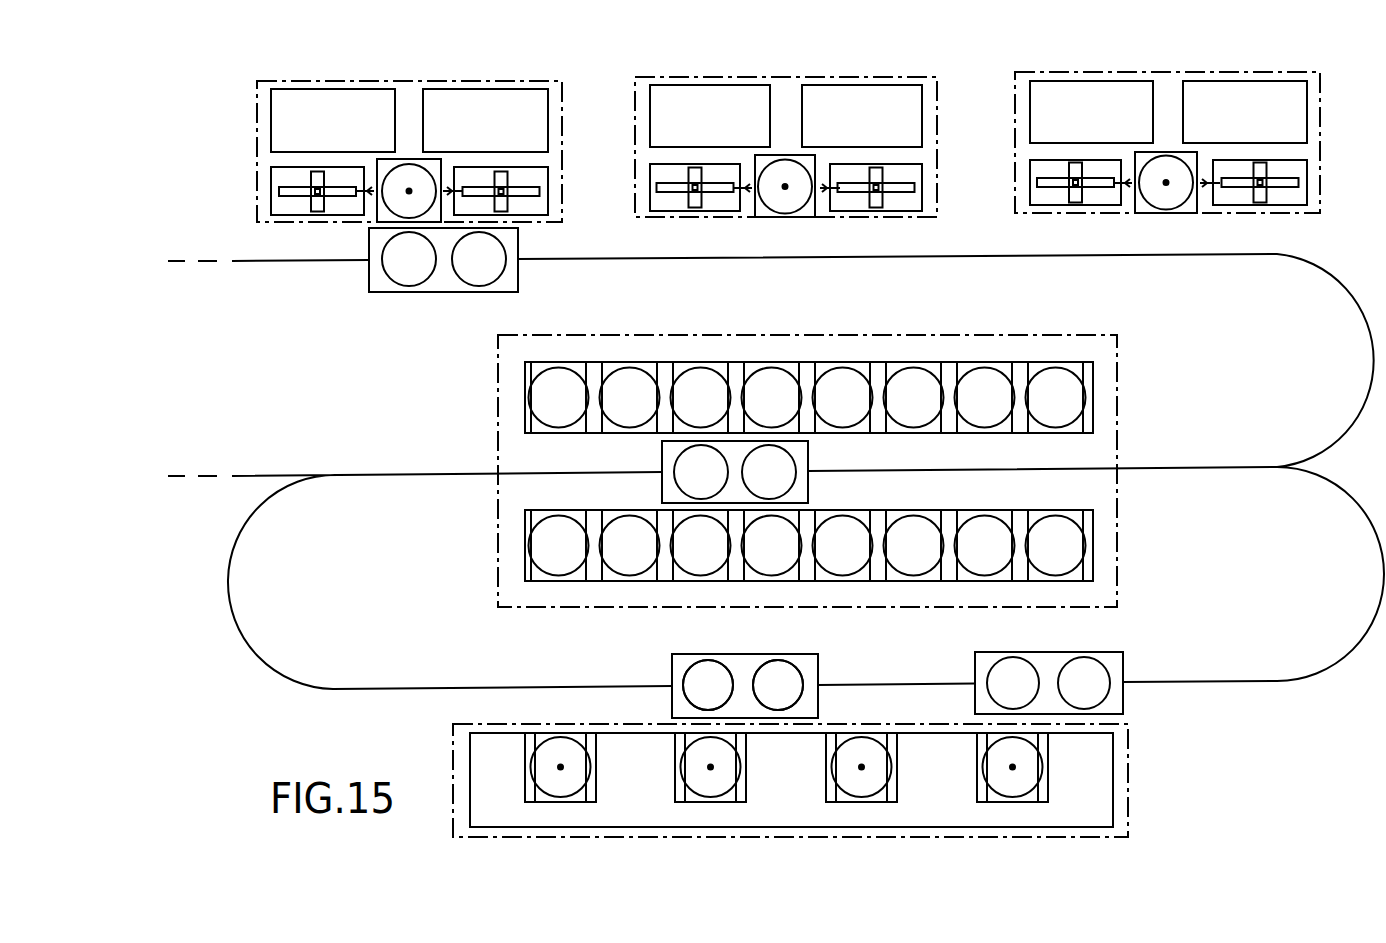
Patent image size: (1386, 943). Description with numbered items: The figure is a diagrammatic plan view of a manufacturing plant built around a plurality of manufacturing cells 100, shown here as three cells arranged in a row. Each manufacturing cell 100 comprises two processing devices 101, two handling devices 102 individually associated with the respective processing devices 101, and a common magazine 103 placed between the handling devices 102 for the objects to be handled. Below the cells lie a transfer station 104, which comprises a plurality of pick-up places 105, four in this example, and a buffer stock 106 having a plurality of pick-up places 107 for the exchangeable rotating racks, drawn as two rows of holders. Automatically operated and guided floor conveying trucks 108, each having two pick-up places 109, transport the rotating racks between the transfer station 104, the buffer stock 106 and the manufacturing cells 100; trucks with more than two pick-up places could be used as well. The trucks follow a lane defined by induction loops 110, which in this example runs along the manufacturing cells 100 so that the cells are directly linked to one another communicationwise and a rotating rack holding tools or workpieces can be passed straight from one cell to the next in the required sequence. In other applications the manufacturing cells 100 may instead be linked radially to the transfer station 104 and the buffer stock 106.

The manufacturing cell 100 is at (288, 81).
The processing device 101 is at (282, 100).
The handling device 102 is at (282, 193).
The common magazine 103 is at (409, 173).
The transfer station 104 is at (1130, 743).
The pick-up place 105 is at (1032, 762).
The buffer stock 106 is at (1120, 363).
The pick-up place 107 is at (1068, 387).
The floor conveying truck 108 is at (445, 278).
The pick-up place 109 is at (713, 673).
The induction loop 110 is at (1339, 287).